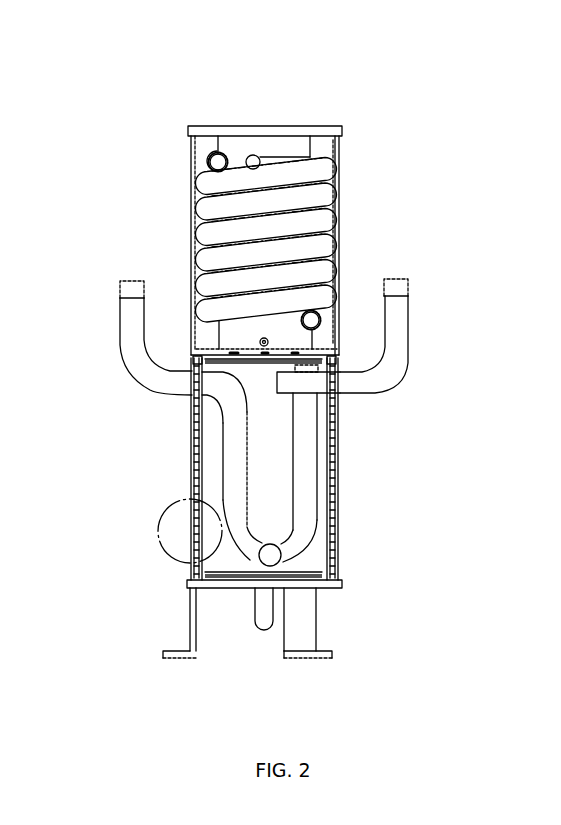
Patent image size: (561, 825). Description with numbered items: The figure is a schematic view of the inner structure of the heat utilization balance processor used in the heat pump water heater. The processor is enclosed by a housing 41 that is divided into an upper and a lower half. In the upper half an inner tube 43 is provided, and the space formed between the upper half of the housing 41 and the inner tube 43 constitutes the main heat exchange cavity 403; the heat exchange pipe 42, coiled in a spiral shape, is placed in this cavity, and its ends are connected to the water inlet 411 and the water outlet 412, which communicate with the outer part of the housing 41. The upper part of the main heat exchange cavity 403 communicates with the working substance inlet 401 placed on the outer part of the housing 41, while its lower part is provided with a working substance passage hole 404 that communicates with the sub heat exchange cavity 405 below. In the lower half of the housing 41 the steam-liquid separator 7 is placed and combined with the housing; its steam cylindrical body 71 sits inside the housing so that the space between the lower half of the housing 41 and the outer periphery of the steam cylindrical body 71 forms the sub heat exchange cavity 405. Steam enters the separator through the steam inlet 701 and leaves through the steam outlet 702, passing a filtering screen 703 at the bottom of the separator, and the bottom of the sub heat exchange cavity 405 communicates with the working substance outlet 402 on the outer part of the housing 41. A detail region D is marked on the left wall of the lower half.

The housing 41 is at (341, 190).
The heat exchange pipe 42 is at (317, 254).
The inner tube 43 is at (288, 150).
The working substance inlet 401 is at (256, 157).
The working substance outlet 402 is at (254, 627).
The main heat exchange cavity 403 is at (321, 149).
The working substance passage hole 404 is at (261, 339).
The sub heat exchange cavity 405 is at (337, 442).
The water inlet 411 is at (312, 320).
The water outlet 412 is at (220, 160).
The steam-liquid separator 7 is at (215, 448).
The steam cylindrical body 71 is at (197, 417).
The steam inlet 701 is at (396, 289).
The steam outlet 702 is at (132, 286).
The filtering screen 703 is at (271, 555).
The detail region D is at (179, 531).